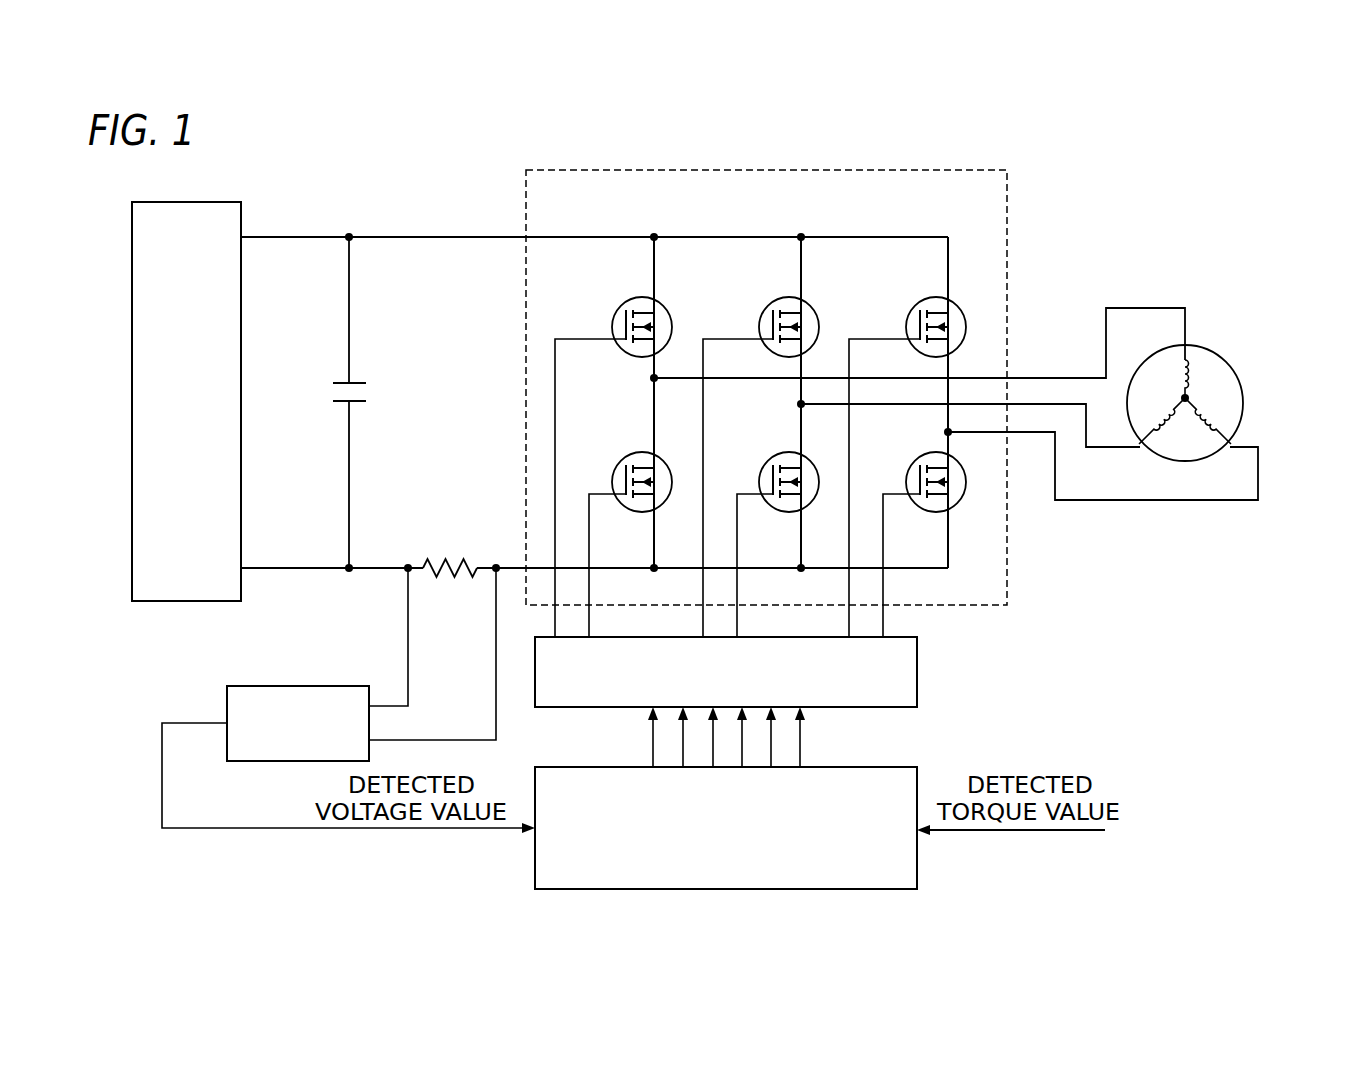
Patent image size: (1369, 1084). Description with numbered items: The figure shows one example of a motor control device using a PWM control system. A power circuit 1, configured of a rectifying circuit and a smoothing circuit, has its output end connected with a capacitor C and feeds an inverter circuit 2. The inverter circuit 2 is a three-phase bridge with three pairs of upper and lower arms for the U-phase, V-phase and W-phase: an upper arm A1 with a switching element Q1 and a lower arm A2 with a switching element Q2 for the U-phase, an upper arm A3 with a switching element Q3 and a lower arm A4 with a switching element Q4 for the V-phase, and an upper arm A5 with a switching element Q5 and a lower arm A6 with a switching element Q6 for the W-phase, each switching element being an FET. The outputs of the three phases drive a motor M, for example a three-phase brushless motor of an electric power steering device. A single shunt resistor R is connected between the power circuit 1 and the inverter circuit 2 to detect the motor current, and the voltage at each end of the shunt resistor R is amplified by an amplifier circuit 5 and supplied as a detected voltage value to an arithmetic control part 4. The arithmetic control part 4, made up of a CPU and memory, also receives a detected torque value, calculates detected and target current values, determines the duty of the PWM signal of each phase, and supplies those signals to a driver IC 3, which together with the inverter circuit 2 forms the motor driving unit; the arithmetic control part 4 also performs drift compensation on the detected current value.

The power circuit 1 is at (132, 402).
The inverter circuit 2 is at (900, 170).
The driver IC 3 is at (917, 672).
The arithmetic control part 4 is at (872, 767).
The amplifier circuit 5 is at (297, 686).
The capacitor C is at (361, 402).
The shunt resistor R is at (450, 553).
The motor M is at (1226, 356).
The switching element Q1 is at (623, 304).
The switching element Q2 is at (623, 461).
The switching element Q3 is at (770, 304).
The switching element Q4 is at (770, 461).
The switching element Q5 is at (921, 304).
The switching element Q6 is at (917, 461).
The upper arm A1 is at (656, 258).
The lower arm A2 is at (656, 533).
The upper arm A3 is at (803, 258).
The lower arm A4 is at (803, 533).
The upper arm A5 is at (950, 258).
The lower arm A6 is at (950, 533).